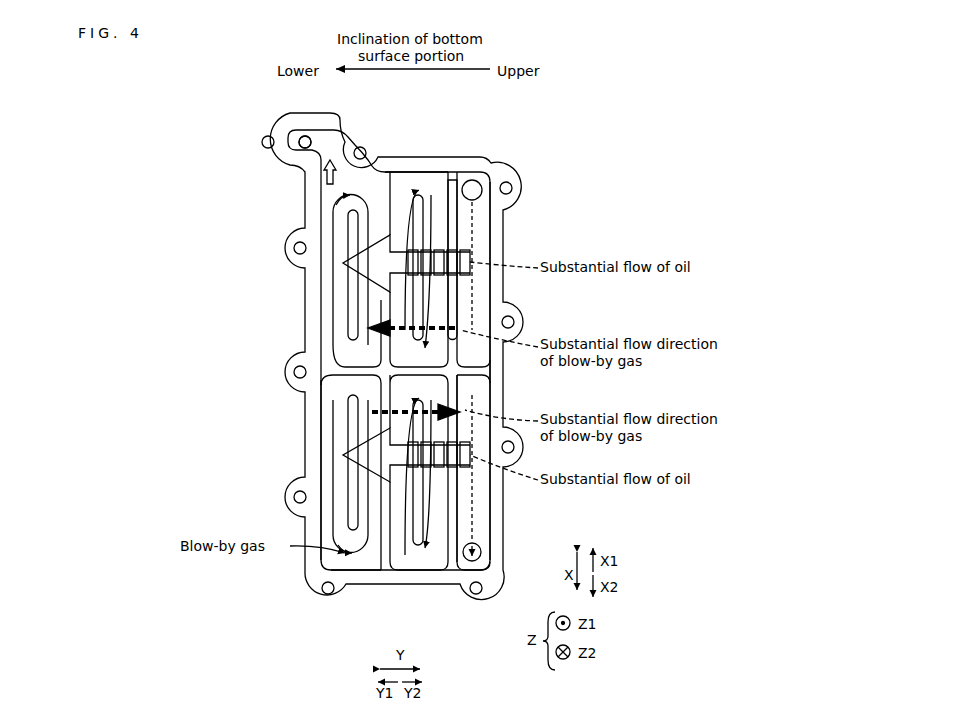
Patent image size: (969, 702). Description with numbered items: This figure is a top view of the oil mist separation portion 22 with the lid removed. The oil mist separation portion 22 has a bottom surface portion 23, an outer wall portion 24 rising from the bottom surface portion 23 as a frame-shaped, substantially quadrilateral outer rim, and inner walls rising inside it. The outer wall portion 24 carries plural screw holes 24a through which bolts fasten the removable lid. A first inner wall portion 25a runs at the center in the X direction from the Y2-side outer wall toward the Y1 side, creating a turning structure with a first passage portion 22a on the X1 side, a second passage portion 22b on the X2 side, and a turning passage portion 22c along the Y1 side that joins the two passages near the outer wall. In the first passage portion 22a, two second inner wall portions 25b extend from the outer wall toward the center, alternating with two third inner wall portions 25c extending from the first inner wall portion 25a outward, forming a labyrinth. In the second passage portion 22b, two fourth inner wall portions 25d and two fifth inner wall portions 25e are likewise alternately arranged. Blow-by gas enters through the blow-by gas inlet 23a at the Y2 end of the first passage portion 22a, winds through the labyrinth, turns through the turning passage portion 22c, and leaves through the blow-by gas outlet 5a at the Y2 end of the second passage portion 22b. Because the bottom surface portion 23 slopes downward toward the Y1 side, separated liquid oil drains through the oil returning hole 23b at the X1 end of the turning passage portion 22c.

The oil mist separation portion 22 is at (516, 140).
The first passage portion 22a is at (438, 185).
The second passage portion 22b is at (368, 568).
The turning passage portion 22c is at (345, 318).
The bottom surface portion 23 is at (476, 522).
The blow-by gas inlet 23a is at (476, 196).
The oil returning hole 23b is at (300, 150).
The outer wall portion 24 is at (493, 400).
The screw holes 24a is at (262, 142).
The first inner wall portion 25a is at (455, 375).
The second inner wall portions 25b is at (352, 195).
The third inner wall portions 25c is at (422, 200).
The fourth inner wall portions 25d is at (400, 420).
The fifth inner wall portions 25e is at (392, 455).
The blow-by gas outlet 5a is at (482, 549).